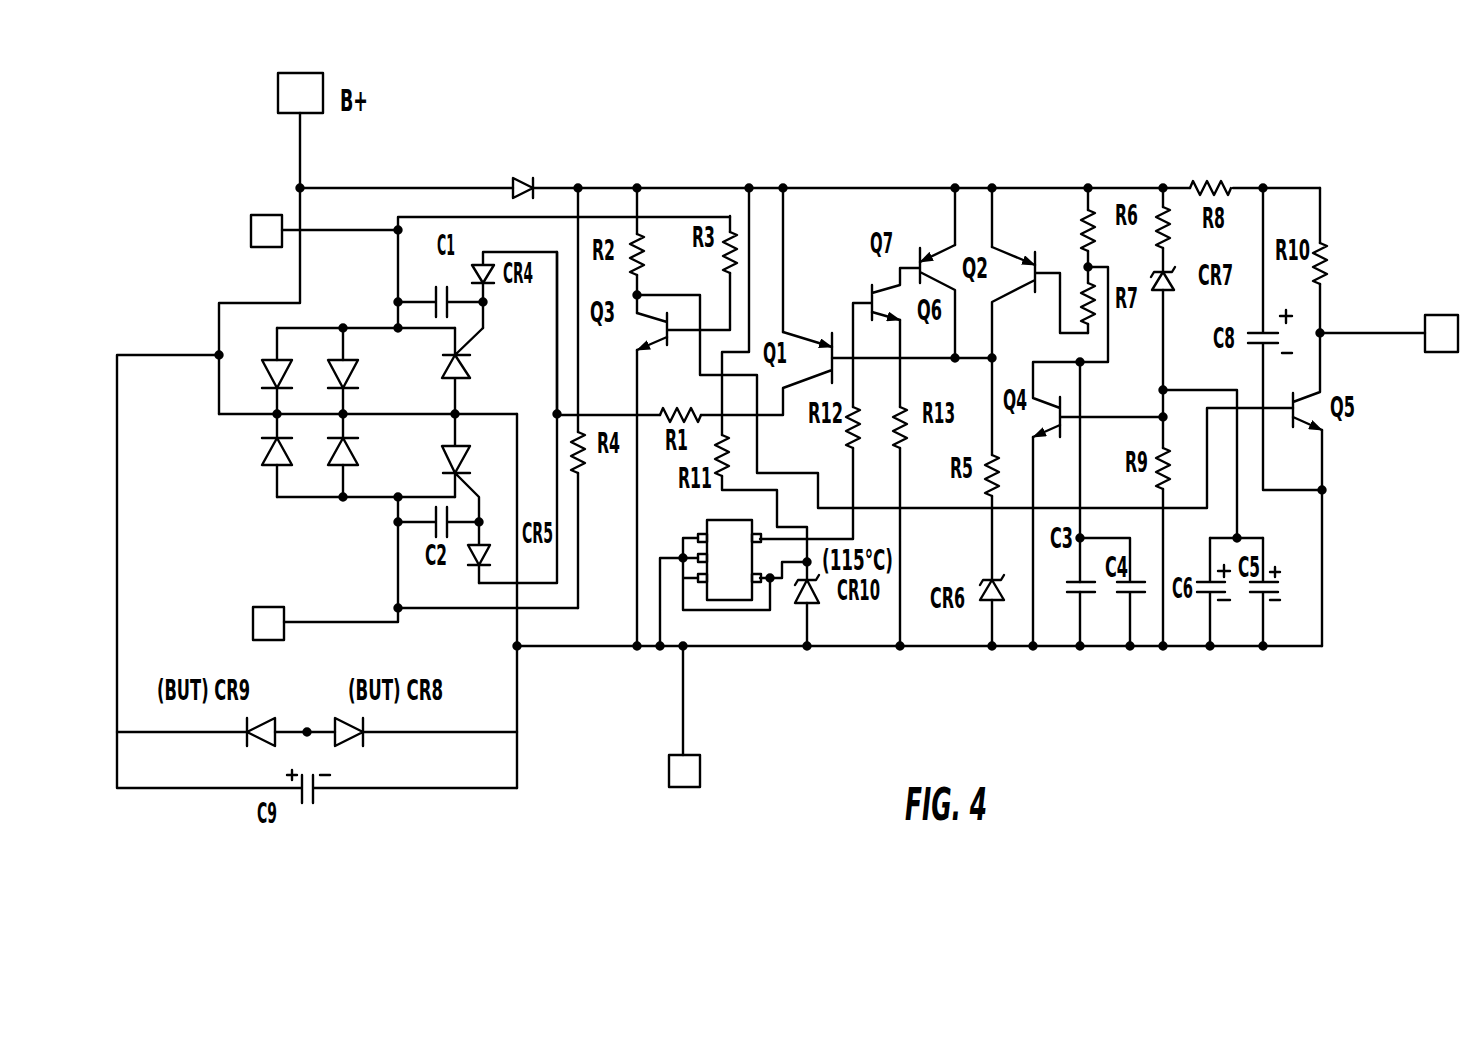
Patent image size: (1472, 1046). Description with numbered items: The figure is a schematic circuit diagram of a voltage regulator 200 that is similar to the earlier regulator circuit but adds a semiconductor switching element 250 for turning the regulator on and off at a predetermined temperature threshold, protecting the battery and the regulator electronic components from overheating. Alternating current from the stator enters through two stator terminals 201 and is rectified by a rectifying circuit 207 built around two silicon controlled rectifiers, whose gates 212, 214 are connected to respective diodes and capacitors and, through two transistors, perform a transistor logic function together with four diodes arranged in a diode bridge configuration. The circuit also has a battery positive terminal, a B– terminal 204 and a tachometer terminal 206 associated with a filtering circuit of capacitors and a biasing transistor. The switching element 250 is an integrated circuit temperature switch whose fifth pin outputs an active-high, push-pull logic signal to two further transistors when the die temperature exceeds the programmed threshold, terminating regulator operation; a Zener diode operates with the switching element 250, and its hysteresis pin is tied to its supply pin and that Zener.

The voltage regulator 200 is at (808, 138).
The stator terminals 201 is at (263, 225).
The B– terminal 204 is at (683, 787).
The tachometer terminal 206 is at (1445, 315).
The rectifying circuit 207 is at (268, 516).
The gate of silicon controlled rectifier SCR1 212 is at (475, 337).
The gate of silicon controlled rectifier SCR2 214 is at (457, 474).
The semiconductor switching element 250 is at (727, 600).